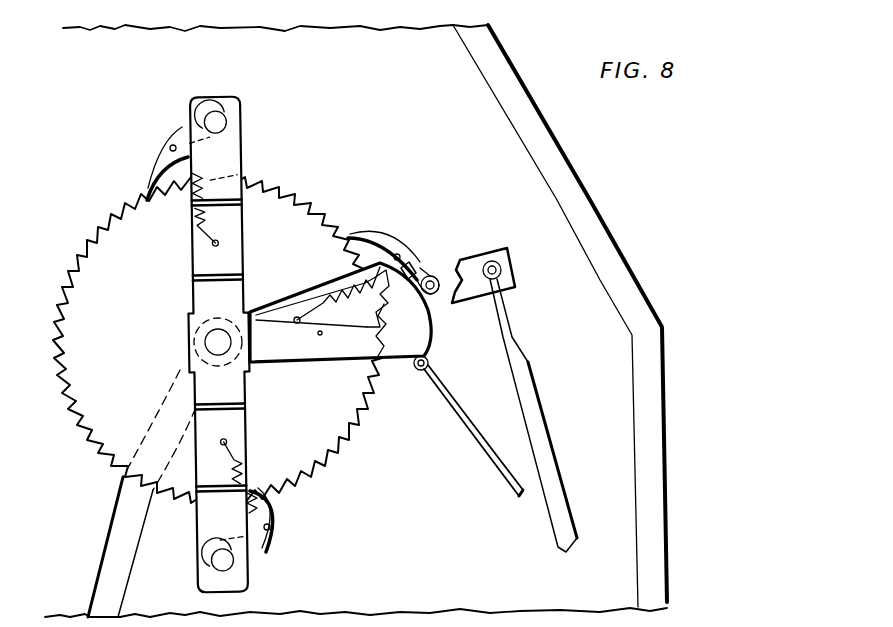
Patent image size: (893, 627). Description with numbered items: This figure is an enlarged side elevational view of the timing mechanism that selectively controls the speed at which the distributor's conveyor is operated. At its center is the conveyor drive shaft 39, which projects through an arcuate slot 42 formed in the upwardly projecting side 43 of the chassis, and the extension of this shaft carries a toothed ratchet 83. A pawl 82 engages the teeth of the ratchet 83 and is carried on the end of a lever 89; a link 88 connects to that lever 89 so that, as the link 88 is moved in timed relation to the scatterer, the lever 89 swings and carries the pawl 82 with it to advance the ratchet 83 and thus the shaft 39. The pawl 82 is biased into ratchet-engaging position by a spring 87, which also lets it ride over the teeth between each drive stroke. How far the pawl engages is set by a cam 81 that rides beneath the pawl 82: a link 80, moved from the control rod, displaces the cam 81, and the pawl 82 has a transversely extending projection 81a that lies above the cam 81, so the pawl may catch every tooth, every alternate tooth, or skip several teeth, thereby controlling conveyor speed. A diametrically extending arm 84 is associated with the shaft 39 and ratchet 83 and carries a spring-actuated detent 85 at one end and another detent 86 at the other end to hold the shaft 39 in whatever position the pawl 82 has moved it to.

The conveyor drive shaft 39 is at (215, 343).
The arcuate slot 42 is at (115, 522).
The upwardly projecting side of chassis 43 is at (475, 128).
The link 80 is at (458, 412).
The cam 81 is at (401, 345).
The transversely extending projection 81a is at (414, 268).
The pawl 82 is at (380, 244).
The ratchet 83 is at (297, 223).
The diametrically extending arm 84 is at (230, 158).
The spring-actuated detent 85 is at (182, 128).
The spring-actuated detent 86 is at (262, 544).
The spring 87 is at (340, 283).
The link 88 is at (537, 430).
The lever 89 is at (513, 258).